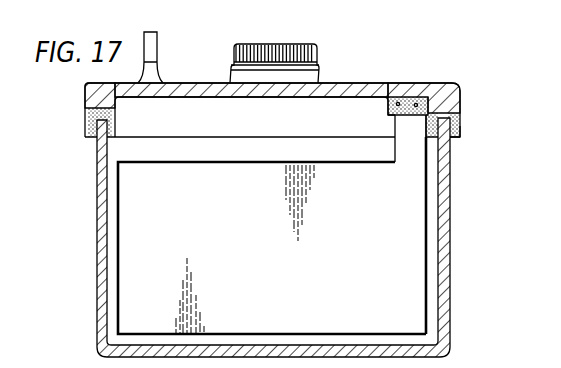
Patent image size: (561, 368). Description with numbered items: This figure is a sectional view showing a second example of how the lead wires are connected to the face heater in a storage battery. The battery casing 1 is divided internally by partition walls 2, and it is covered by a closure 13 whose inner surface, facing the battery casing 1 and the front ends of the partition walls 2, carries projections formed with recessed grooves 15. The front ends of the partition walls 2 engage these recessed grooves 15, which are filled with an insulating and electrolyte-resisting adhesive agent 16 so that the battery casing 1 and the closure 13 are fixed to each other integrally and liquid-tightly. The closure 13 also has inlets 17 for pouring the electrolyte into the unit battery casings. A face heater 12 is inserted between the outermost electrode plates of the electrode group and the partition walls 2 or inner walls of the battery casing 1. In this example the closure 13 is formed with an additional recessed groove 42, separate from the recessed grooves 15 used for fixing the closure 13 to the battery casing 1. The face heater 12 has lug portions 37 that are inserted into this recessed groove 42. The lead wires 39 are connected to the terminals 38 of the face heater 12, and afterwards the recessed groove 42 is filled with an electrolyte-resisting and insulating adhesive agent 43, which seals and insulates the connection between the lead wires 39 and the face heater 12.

The battery casing 1 is at (450, 216).
The partition walls 2 is at (434, 246).
The face heater 12 is at (428, 281).
The closure 13 is at (338, 96).
The recessed grooves 15 is at (456, 137).
The insulating and electrolyte-resisting adhesive agent 16 is at (456, 118).
The inlets 17 is at (233, 52).
The lug portions 37 is at (396, 128).
The terminals 38 is at (395, 100).
The lead wires 39 is at (402, 99).
The recessed groove 42 is at (432, 108).
The electrolyte-resisting and insulating adhesive agent 43 is at (443, 104).